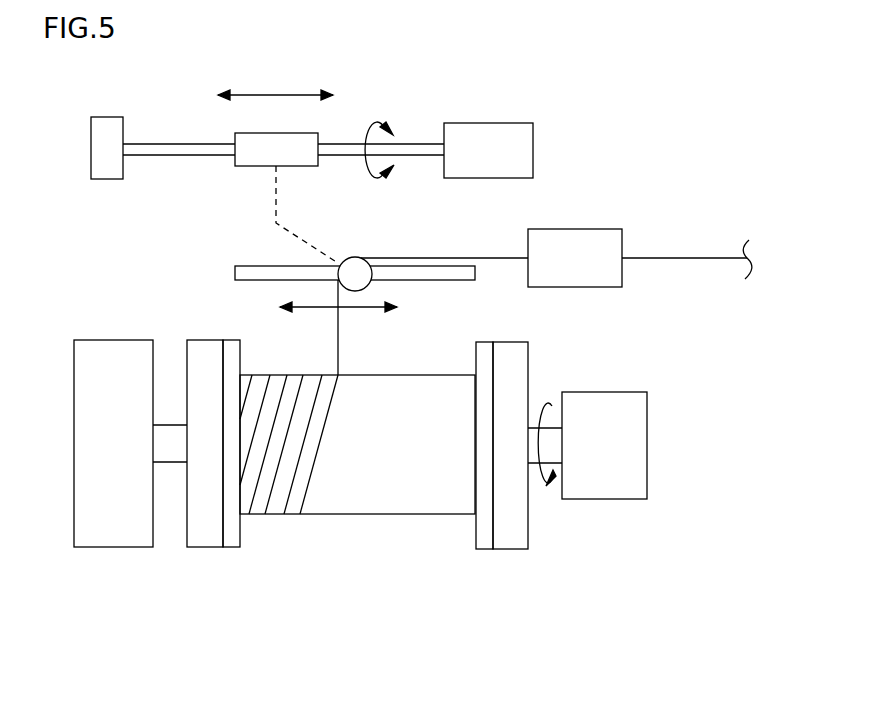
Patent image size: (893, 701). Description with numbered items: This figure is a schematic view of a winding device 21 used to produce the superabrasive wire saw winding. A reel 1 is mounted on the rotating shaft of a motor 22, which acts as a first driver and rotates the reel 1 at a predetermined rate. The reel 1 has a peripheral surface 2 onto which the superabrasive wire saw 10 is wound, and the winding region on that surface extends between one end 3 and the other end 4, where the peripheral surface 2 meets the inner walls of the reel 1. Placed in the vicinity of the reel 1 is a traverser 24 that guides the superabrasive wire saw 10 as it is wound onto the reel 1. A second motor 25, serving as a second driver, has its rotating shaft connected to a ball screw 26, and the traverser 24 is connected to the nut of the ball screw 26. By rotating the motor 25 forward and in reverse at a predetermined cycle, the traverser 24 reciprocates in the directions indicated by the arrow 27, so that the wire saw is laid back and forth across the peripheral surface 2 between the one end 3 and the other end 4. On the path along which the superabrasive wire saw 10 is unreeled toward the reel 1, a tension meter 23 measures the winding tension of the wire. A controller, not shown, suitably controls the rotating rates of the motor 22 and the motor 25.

The reel 1 is at (485, 537).
The peripheral surface 2 is at (373, 514).
The one end 3 is at (243, 514).
The other end 4 is at (474, 516).
The superabrasive wire saw 10 is at (708, 258).
The winding device 21 is at (590, 121).
The motor 22 is at (626, 485).
The tension meter 23 is at (596, 238).
The traverser 24 is at (355, 268).
The motor 25 is at (508, 136).
The ball screw 26 is at (157, 143).
The arrow 27 is at (278, 95).